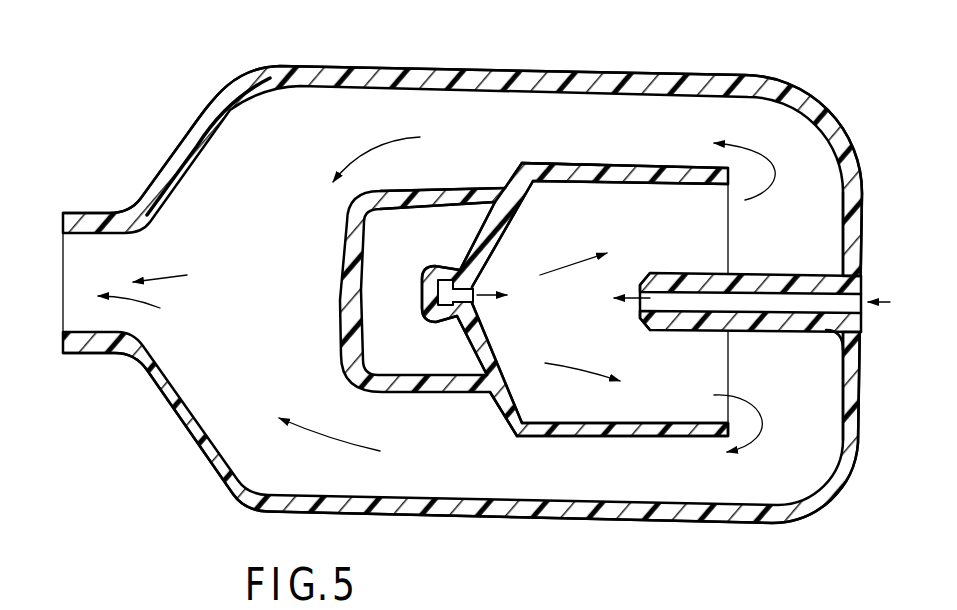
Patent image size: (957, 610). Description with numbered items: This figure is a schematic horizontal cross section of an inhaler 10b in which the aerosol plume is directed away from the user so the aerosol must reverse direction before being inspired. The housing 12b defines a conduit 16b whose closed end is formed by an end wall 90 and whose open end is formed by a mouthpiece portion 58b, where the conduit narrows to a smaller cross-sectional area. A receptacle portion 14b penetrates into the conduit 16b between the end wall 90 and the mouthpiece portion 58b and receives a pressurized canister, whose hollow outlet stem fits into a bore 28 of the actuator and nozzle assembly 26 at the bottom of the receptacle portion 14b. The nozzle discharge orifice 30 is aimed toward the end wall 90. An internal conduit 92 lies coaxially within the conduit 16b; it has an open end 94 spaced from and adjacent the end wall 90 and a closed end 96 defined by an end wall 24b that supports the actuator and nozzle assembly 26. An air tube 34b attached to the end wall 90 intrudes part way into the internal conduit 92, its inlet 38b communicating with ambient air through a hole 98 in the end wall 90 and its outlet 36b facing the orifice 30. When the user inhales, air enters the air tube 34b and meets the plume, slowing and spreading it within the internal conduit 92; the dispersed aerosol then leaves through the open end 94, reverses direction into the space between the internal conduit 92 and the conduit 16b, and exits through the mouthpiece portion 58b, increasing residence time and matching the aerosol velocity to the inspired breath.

The inhaler 10b is at (193, 531).
The housing 12b is at (482, 62).
The receptacle portion 14b is at (393, 190).
The conduit 16b is at (622, 168).
The end wall 24b is at (484, 350).
The actuator and nozzle assembly 26 is at (420, 313).
The bore 28 is at (440, 295).
The nozzle discharge orifice 30 is at (455, 288).
The air tube 34b is at (784, 275).
The outlet 36b is at (630, 316).
The inlet 38b is at (838, 292).
The mouthpiece portion 58b is at (103, 357).
The end wall 90 is at (853, 182).
The internal conduit 92 is at (577, 148).
The open end 94 is at (728, 364).
The closed end 96 is at (505, 222).
The hole 98 is at (864, 298).